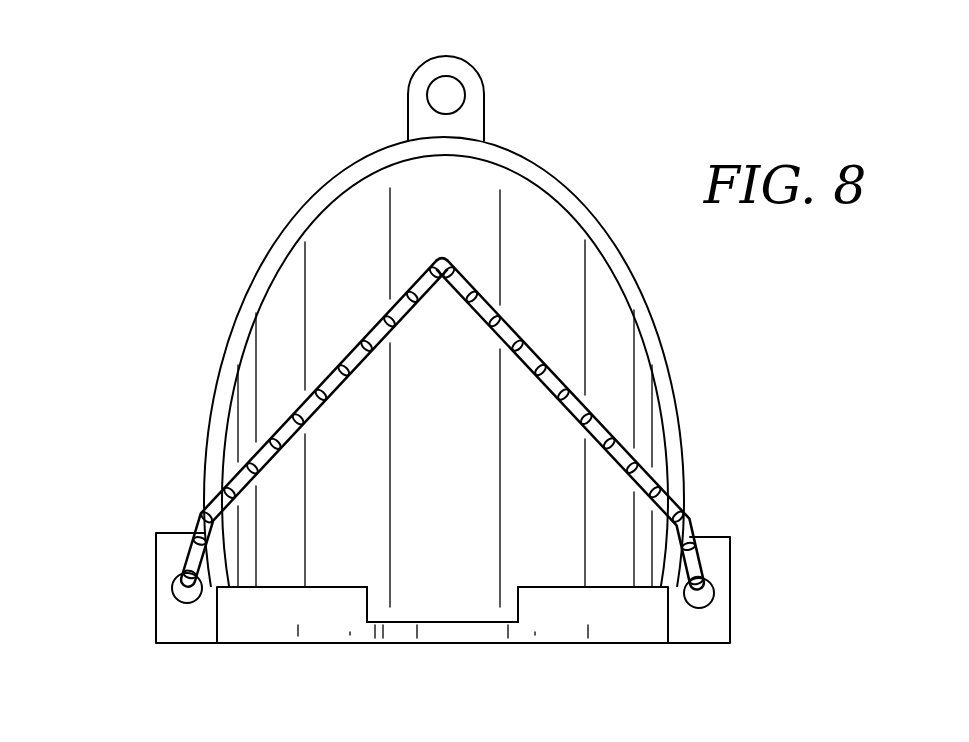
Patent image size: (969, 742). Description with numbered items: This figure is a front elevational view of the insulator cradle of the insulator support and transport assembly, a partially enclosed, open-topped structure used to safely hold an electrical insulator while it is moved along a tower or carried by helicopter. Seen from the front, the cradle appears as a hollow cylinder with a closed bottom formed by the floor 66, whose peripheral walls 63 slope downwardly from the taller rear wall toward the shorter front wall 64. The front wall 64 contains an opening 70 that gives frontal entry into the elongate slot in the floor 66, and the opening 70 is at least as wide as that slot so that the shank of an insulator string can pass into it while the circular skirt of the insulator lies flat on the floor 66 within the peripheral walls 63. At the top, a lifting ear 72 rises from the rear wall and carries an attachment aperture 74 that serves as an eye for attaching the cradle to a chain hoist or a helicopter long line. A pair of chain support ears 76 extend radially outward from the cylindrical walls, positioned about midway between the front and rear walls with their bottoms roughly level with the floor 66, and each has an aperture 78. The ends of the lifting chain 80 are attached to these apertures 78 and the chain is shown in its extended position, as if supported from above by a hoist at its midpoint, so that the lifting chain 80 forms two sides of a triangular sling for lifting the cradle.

The peripheral walls 63 is at (668, 353).
The front wall 64 is at (313, 625).
The floor 66 is at (427, 622).
The opening 70 is at (475, 610).
The lifting ear 72 is at (418, 83).
The attachment aperture 74 is at (447, 97).
The chain support ears 76 is at (168, 568).
The aperture 78 is at (170, 595).
The lifting chain 80 is at (507, 325).